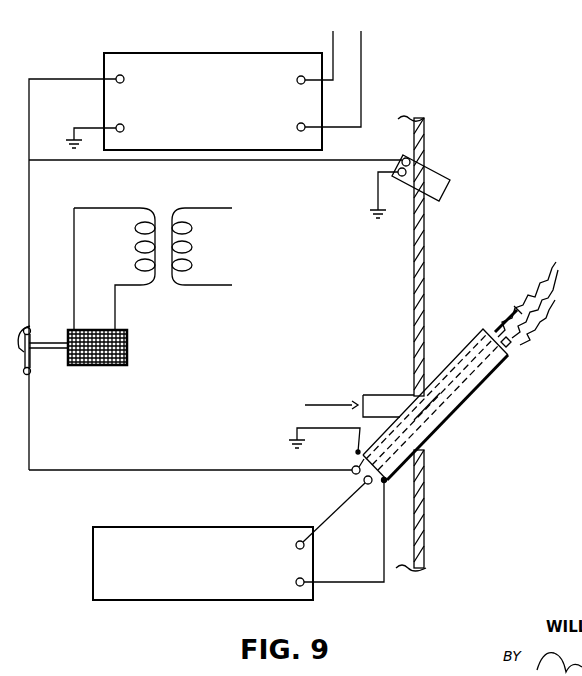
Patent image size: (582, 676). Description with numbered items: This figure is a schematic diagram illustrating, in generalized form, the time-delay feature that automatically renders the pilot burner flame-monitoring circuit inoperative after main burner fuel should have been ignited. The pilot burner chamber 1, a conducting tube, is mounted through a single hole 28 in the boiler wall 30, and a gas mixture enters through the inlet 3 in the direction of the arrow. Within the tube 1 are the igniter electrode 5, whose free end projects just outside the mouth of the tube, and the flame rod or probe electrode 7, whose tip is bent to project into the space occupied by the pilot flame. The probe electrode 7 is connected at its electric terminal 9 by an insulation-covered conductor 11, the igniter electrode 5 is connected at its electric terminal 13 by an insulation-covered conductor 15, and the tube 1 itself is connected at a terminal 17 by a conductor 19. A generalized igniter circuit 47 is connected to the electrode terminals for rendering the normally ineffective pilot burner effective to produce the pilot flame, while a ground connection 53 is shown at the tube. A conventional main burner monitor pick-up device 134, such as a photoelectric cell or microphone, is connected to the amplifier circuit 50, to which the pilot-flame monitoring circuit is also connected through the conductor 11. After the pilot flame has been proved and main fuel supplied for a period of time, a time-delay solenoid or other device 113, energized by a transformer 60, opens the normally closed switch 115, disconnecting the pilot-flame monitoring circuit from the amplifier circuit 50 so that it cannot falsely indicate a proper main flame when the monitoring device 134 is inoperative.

The amplifier circuit 50 is at (229, 53).
The pick-up device 134 is at (439, 197).
The boiler wall 30 is at (425, 505).
The transformer 60 is at (161, 218).
The time-delay solenoid 113 is at (127, 345).
The normally closed switch 115 is at (43, 346).
The insulation-covered conductor 11 is at (240, 469).
The electric terminal 9 is at (353, 475).
The inlet 3 is at (390, 395).
The pilot burner chamber 1 is at (436, 430).
The probe electrode 7 is at (510, 318).
The igniter electrode 5 is at (508, 349).
The single hole 28 is at (428, 447).
The ground connection 53 is at (306, 446).
The electric terminal 13 is at (368, 485).
The insulation-covered conductor 15 is at (337, 507).
The terminal 17 is at (387, 482).
The conductor 19 is at (384, 539).
The igniter circuit 47 is at (200, 592).